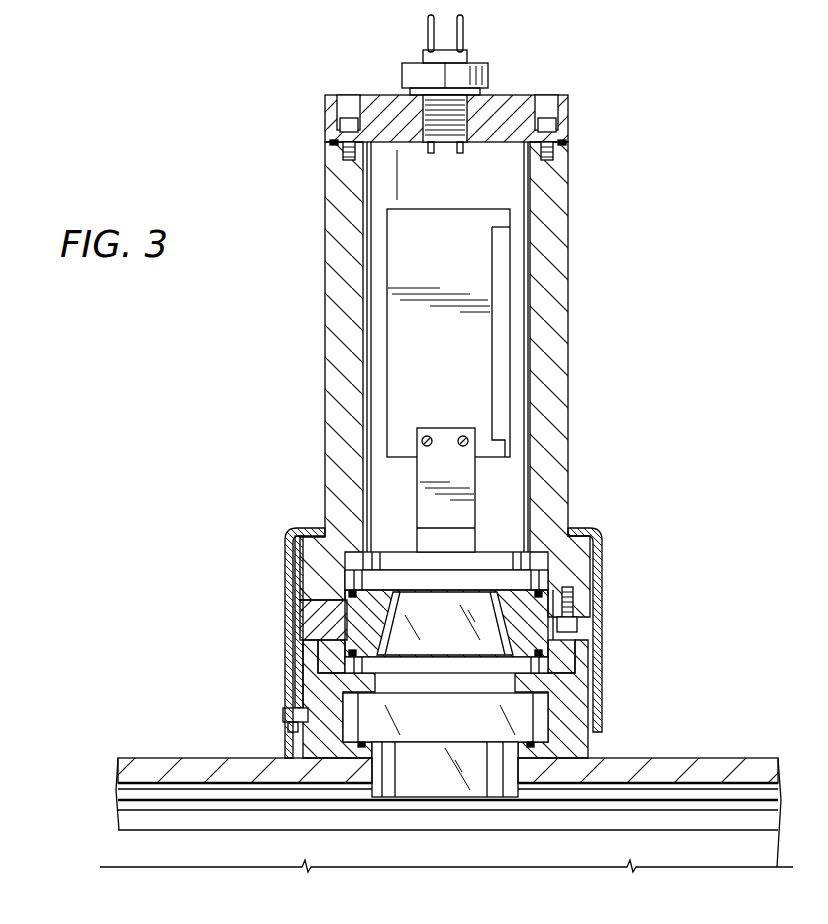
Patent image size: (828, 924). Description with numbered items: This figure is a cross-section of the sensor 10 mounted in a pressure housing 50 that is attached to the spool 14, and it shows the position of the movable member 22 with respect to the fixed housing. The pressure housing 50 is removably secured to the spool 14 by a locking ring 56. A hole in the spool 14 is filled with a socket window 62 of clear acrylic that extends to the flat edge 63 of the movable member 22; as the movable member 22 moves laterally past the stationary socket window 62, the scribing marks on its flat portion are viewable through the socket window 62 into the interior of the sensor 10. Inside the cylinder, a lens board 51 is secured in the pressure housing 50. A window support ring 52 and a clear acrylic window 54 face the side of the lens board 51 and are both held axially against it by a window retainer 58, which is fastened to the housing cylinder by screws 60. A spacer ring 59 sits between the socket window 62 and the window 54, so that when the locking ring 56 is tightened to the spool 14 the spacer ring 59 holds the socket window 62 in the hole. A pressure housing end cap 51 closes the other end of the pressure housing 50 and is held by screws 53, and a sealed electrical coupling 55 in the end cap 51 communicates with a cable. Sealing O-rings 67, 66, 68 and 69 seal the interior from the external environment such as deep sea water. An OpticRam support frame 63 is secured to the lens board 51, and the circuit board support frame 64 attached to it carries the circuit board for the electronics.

The sensor 10 is at (236, 140).
The spool 14 is at (224, 757).
The movable member 22 is at (135, 835).
The pressure housing 50 is at (560, 333).
The lens board 51 is at (388, 110).
The window support ring 52 is at (525, 590).
The screws 53 is at (547, 122).
The window 54 is at (405, 622).
The sealed electrical coupling 55 is at (487, 73).
The locking ring 56 is at (290, 562).
The window retainer 58 is at (560, 683).
The spacer ring 59 is at (545, 715).
The screws 60 is at (577, 627).
The socket window 62 is at (422, 783).
The OpticRam support frame 63 is at (430, 470).
The circuit board support frame 64 is at (405, 317).
The sealing O-ring 66 is at (345, 598).
The sealing O-ring 67 is at (563, 139).
The sealing O-ring 68 is at (340, 640).
The sealing O-ring 69 is at (550, 762).